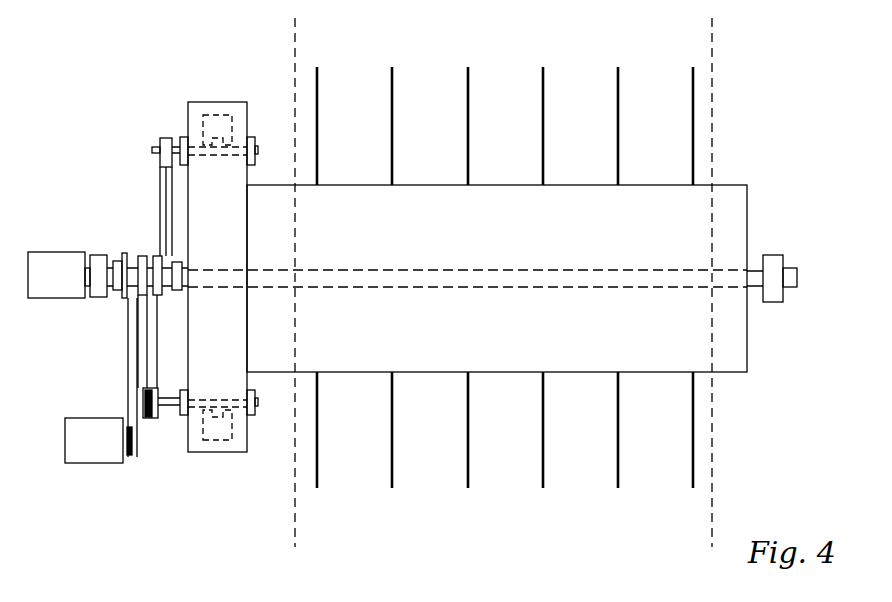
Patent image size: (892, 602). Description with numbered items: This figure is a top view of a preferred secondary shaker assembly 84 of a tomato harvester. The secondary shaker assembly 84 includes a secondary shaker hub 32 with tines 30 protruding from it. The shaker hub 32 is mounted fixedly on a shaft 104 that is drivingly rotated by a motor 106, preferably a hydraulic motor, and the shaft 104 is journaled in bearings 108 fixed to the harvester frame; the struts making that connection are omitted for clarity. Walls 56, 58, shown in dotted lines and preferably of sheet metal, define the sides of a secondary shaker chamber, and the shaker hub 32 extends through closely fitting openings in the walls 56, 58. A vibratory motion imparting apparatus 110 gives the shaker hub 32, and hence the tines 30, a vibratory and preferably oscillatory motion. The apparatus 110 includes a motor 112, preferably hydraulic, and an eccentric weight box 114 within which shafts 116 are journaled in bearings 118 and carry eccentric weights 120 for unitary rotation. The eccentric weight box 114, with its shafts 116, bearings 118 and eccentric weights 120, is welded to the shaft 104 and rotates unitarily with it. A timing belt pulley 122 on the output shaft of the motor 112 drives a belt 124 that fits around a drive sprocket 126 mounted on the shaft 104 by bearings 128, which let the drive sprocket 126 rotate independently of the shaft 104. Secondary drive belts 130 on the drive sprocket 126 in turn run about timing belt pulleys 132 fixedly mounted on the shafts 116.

The tines 30 is at (470, 78).
The secondary shaker hub 32 is at (754, 351).
The wall 56 is at (712, 123).
The wall 58 is at (295, 520).
The secondary shaker assembly 84 is at (225, 497).
The shaft 104 is at (88, 291).
The motor 106 is at (38, 262).
The bearings 108 is at (100, 253).
The vibratory motion imparting apparatus 110 is at (117, 107).
The motor 112 is at (116, 452).
The eccentric weight box 114 is at (224, 99).
The shafts 116 is at (152, 150).
The bearings 118 is at (185, 137).
The eccentric weights 120 is at (213, 118).
The timing belt pulley 122 is at (142, 457).
The belt 124 is at (135, 365).
The drive sprocket 126 is at (122, 260).
The bearings 128 is at (118, 260).
The secondary drive belts 130 is at (165, 180).
The timing belt pulleys 132 is at (160, 138).